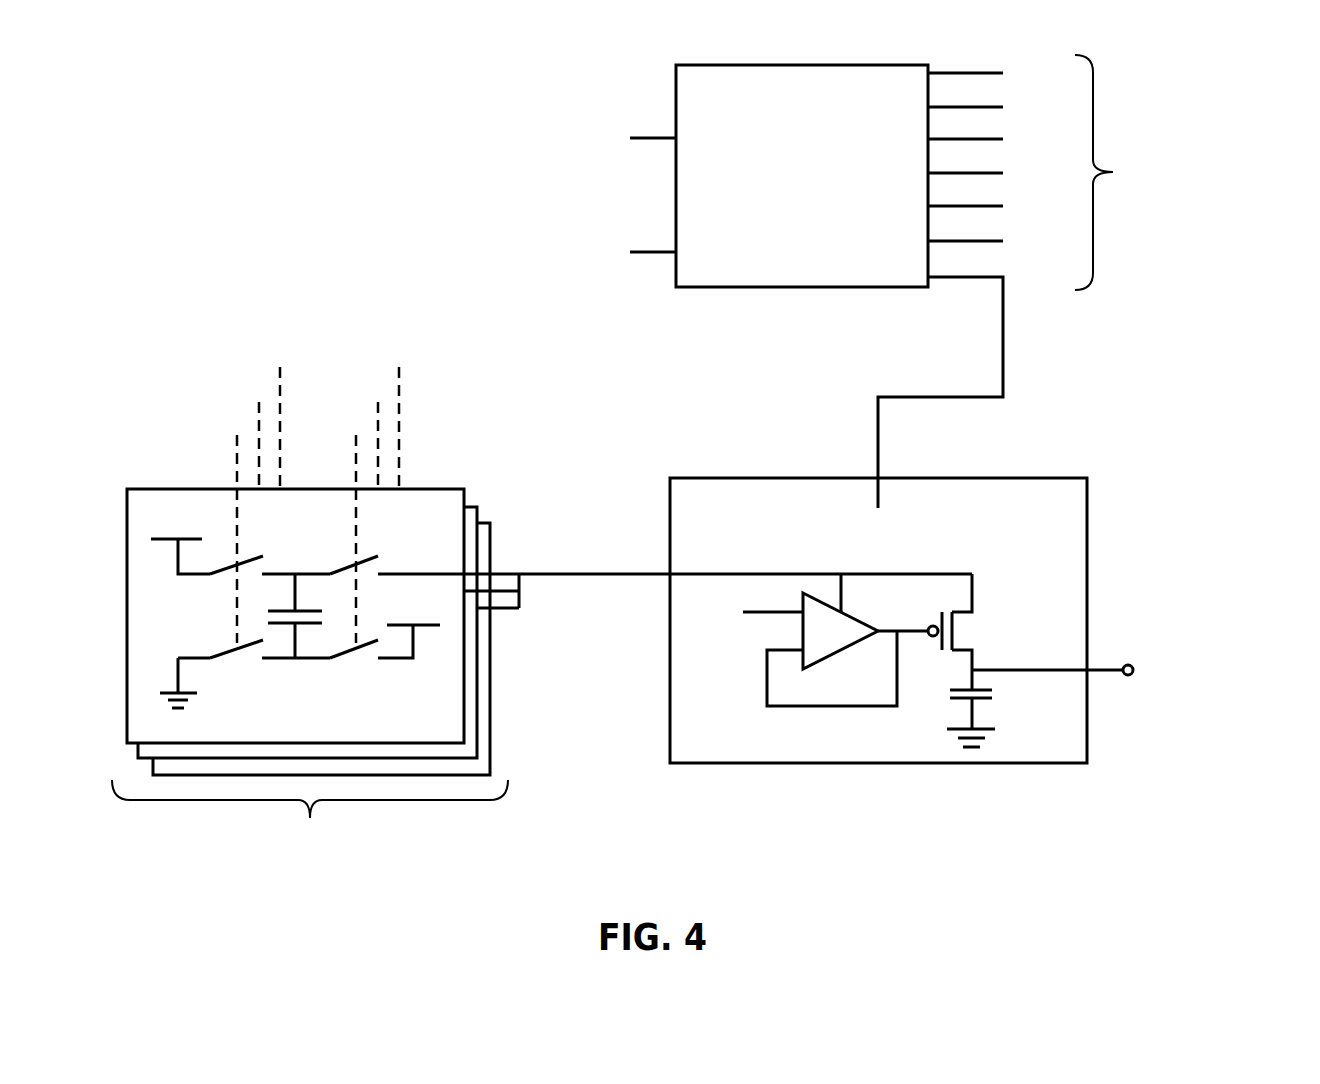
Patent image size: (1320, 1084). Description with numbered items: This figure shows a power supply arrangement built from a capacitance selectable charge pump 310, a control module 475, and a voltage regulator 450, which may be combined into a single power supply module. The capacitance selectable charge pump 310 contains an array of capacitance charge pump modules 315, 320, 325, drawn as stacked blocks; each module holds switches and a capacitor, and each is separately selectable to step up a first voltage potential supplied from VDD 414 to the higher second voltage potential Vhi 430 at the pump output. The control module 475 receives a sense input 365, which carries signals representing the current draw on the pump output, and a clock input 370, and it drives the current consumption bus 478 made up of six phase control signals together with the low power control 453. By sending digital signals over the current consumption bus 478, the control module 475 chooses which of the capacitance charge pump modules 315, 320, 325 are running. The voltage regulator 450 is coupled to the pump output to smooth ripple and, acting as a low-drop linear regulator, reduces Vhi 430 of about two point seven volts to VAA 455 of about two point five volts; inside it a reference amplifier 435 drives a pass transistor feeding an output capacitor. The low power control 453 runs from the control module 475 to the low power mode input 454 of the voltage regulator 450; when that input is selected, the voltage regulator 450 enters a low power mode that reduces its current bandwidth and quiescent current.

The capacitance selectable charge pump 310 is at (339, 609).
The capacitance charge pump module 315 is at (328, 540).
The capacitance charge pump module 320 is at (477, 507).
The capacitance charge pump module 325 is at (490, 523).
The VDD supply 414 is at (152, 548).
The Vhi 430 is at (585, 539).
The sense input 365 is at (588, 140).
The clock input 370 is at (596, 254).
The control module 475 is at (823, 223).
The current consumption bus 478 is at (1110, 172).
The low power control 453 is at (965, 370).
The low power mode input 454 is at (888, 507).
The Vref amplifier 435 is at (722, 622).
The voltage regulator 450 is at (975, 652).
The VAA 455 is at (1175, 648).